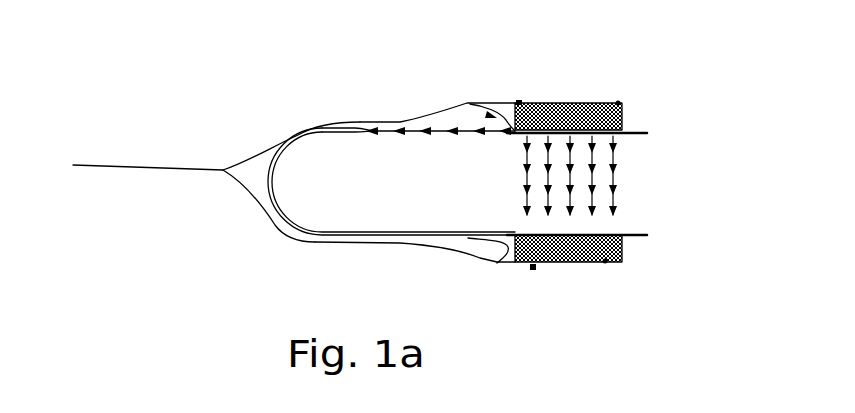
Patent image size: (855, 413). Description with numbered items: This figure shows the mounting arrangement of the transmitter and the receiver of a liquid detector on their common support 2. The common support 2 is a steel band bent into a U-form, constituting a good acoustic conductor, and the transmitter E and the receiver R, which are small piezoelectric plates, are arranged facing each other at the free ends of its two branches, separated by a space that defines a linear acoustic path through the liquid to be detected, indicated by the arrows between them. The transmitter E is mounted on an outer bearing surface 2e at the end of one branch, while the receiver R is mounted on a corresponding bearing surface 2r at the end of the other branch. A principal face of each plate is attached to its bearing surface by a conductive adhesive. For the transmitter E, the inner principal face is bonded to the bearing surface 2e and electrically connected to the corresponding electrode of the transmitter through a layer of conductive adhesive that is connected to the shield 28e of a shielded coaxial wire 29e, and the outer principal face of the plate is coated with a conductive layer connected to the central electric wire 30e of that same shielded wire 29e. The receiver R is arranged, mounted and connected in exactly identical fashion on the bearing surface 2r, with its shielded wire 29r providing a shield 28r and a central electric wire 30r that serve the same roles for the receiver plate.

The common support 2 is at (302, 133).
The shielded coaxial wire 29e is at (434, 111).
The shield 28e is at (490, 118).
The central electric wire 30e is at (512, 101).
The transmitter E is at (621, 103).
The bearing surface 2e is at (638, 124).
The shielded wire 29r is at (375, 245).
The shield 28r is at (468, 237).
The central electric wire 30r is at (533, 268).
The receiver R is at (605, 262).
The bearing surface 2r is at (640, 240).